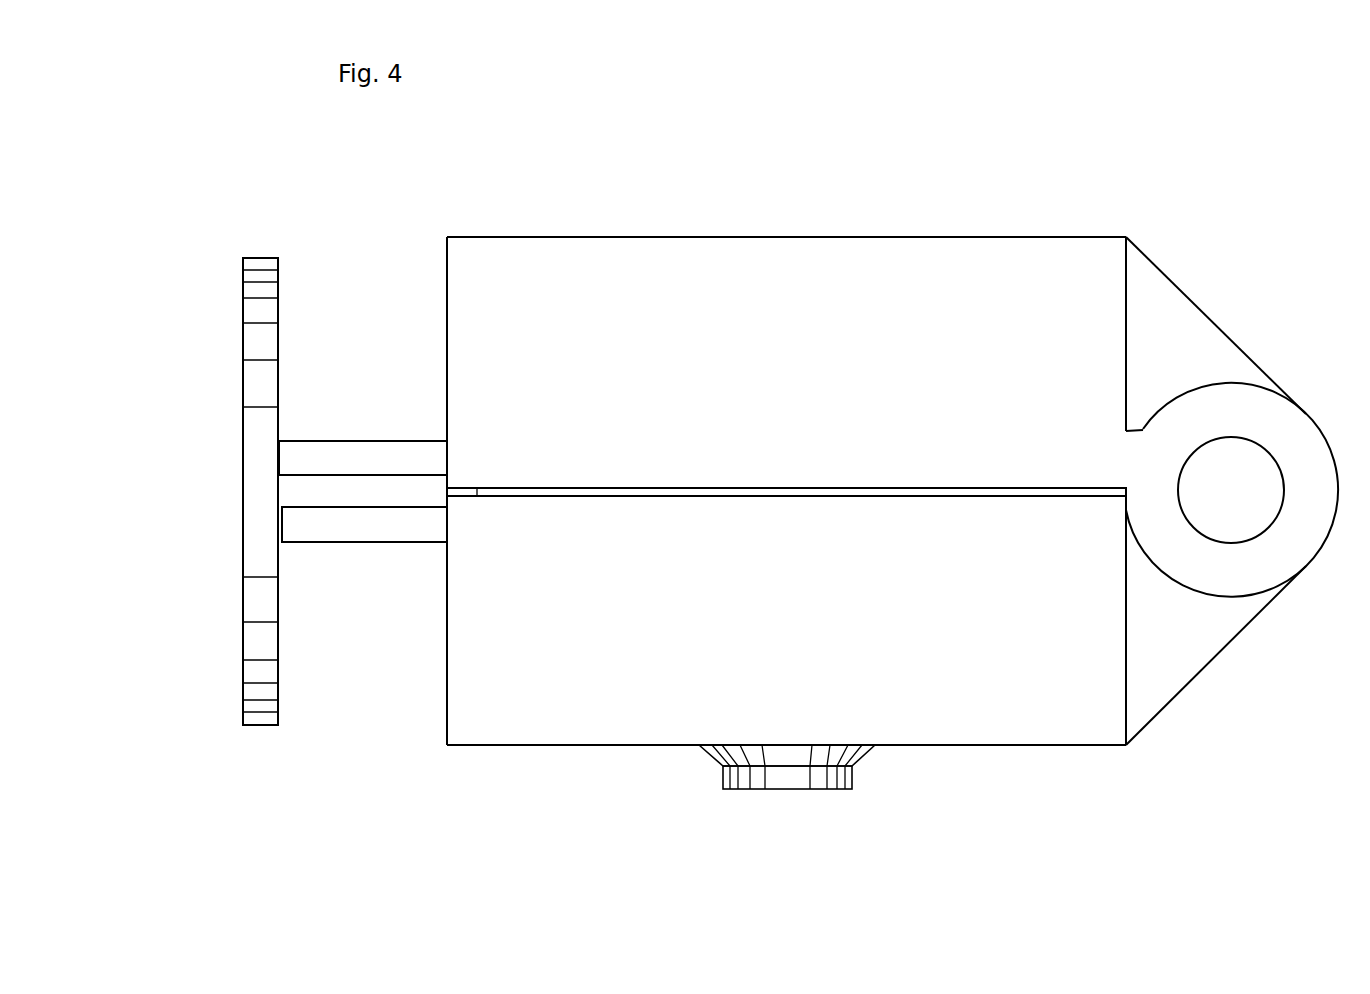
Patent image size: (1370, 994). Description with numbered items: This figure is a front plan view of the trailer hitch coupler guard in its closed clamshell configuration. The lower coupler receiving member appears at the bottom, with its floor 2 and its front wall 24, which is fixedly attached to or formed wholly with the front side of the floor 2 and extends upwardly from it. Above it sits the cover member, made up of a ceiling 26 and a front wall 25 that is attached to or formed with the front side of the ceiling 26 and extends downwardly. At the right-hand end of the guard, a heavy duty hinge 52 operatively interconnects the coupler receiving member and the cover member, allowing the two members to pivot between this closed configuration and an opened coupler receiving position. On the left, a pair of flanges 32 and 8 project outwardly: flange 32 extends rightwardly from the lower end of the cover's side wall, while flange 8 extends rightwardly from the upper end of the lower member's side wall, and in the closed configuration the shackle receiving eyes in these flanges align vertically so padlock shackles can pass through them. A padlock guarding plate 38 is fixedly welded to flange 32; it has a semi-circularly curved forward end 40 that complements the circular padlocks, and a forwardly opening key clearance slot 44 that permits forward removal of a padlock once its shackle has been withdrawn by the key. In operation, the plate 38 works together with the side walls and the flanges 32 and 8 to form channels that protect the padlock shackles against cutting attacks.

The floor 2 is at (876, 498).
The flange 8 is at (357, 529).
The front wall 24 is at (990, 678).
The front wall 25 is at (625, 337).
The ceiling 26 is at (817, 237).
The flange 32 is at (315, 452).
The padlock guarding plate 38 is at (262, 260).
The forward end 40 is at (258, 705).
The key clearance slot 44 is at (260, 493).
The heavy duty hinge 52 is at (1218, 576).